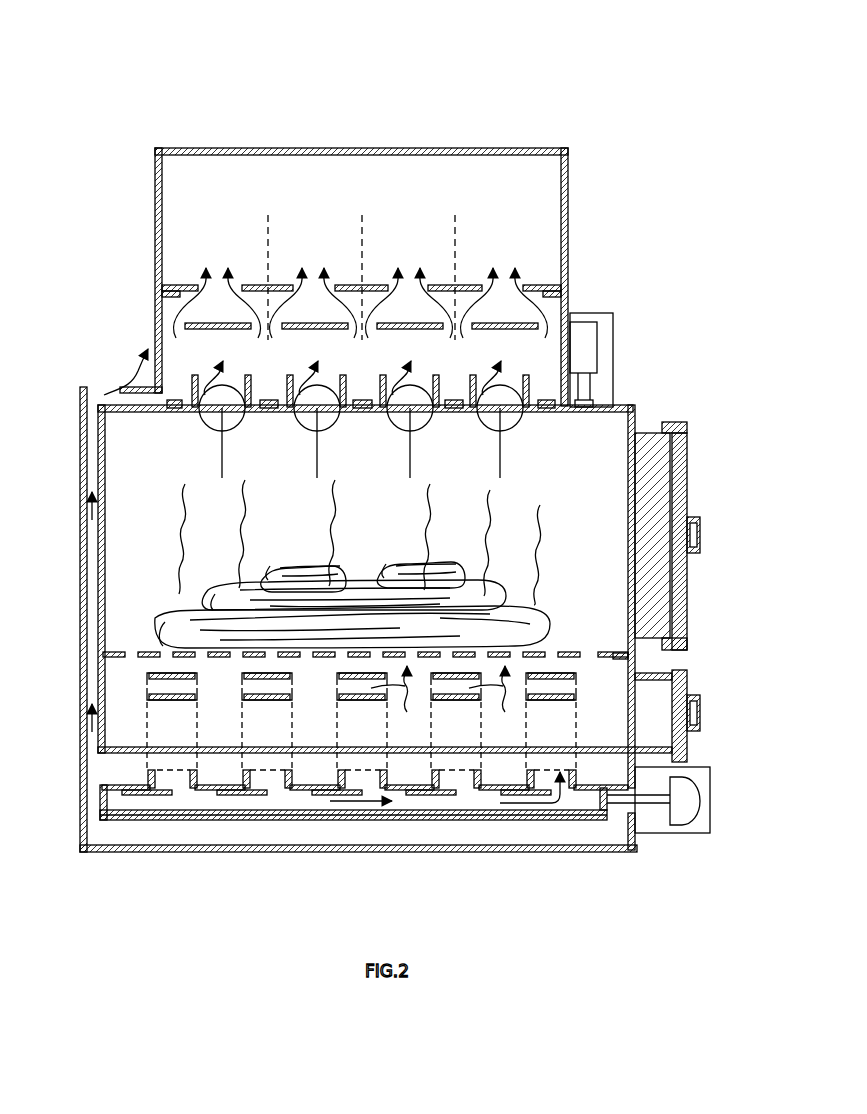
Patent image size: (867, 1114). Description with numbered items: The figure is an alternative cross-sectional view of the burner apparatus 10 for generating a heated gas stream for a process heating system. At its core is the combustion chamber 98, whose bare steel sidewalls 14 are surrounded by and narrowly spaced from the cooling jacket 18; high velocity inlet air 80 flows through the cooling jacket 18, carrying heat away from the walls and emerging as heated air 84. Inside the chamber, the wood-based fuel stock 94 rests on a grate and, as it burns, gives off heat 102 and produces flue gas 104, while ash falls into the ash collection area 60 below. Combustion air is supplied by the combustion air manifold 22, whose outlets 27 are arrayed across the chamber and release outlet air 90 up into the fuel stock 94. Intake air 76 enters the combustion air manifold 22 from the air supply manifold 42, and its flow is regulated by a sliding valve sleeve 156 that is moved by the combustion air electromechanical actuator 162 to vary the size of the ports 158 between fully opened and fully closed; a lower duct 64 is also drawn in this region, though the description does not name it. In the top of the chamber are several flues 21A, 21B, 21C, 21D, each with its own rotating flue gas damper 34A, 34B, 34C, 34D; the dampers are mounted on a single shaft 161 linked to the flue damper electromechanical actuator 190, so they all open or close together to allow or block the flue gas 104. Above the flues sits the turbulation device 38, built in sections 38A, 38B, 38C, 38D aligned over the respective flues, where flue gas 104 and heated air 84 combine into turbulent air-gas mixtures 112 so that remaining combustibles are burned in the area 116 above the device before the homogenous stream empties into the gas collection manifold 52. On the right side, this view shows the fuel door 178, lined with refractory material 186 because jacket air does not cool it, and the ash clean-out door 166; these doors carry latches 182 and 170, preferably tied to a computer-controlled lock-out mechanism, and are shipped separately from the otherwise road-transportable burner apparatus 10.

The burner apparatus 10 is at (278, 82).
The gas collection manifold 52 is at (535, 148).
The area above the turbulation device 116 is at (376, 196).
The turbulent air-gas mixture 112 is at (295, 263).
The turbulation device 38 is at (145, 258).
The turbulation device section 38A is at (203, 226).
The turbulation device section 38B is at (300, 226).
The turbulation device section 38C is at (395, 226).
The turbulation device section 38D is at (490, 226).
The flue gas damper 34A is at (218, 339).
The flue gas damper 34B is at (315, 339).
The flue gas damper 34C is at (410, 339).
The flue gas damper 34D is at (505, 339).
The flue damper electromechanical actuator 190 is at (613, 326).
The heated air 84 is at (126, 390).
The cooling jacket 18 is at (80, 465).
The air supply manifold 42 is at (298, 862).
The sidewalls 14 is at (103, 590).
The combustion chamber 98 is at (598, 452).
The refractory material 186 is at (668, 599).
The fuel door 178 is at (687, 438).
The fuel door latch 182 is at (700, 538).
The ash collection area 60 is at (610, 695).
The ash clean-out door 166 is at (687, 683).
The ash clean-out door latch 170 is at (700, 715).
The combustion air electromechanical actuator 162 is at (664, 836).
The fuel stock 94 is at (548, 622).
The heat 102 is at (192, 540).
The flue gas 104 is at (222, 462).
The flue 21A is at (202, 413).
The flue 21B is at (298, 408).
The flue 21C is at (426, 408).
The flue 21D is at (530, 410).
The shaft 161 is at (326, 410).
The combustion air manifold 22 is at (146, 677).
The outlets 27 is at (142, 689).
The outlet air 90 is at (443, 699).
The inlet air 80 is at (114, 768).
The air inlet duct 64 is at (96, 776).
The sliding valve sleeve 156 is at (240, 818).
The intake air 76 is at (347, 806).
The ports 158 is at (463, 784).